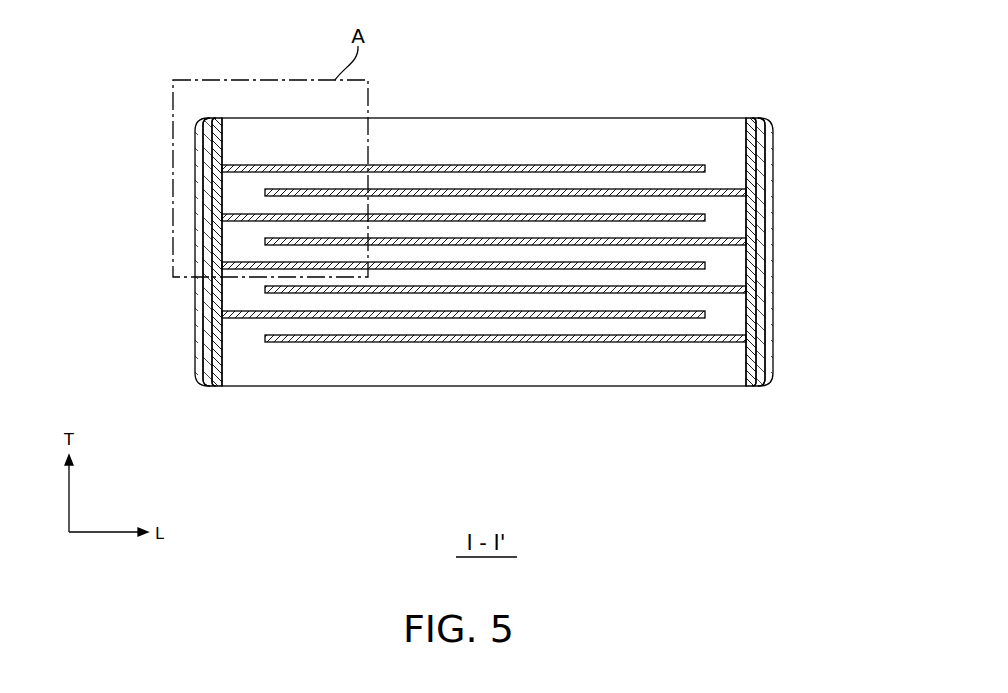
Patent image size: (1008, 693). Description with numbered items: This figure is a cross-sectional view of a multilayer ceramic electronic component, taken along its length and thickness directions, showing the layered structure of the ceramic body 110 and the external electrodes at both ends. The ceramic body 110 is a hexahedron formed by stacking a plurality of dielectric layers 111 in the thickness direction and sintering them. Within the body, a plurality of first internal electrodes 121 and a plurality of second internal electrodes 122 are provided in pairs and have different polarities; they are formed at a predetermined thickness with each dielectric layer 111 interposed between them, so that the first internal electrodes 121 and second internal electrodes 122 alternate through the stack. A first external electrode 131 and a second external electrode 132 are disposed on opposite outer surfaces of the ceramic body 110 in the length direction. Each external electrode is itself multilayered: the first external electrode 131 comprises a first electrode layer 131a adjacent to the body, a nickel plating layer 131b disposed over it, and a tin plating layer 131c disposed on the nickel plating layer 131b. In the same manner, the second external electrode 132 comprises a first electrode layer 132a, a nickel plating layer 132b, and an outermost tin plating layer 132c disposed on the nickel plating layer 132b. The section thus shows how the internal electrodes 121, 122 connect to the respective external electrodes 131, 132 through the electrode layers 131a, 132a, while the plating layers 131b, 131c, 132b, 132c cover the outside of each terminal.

The ceramic body 110 is at (537, 216).
The dielectric layer 111 is at (733, 223).
The first internal electrode 121 is at (709, 214).
The second internal electrode 122 is at (722, 246).
The first external electrode 131 is at (231, 313).
The first electrode layer 131a is at (223, 350).
The nickel plating layer 131b is at (205, 352).
The tin plating layer 131c is at (169, 292).
The second external electrode 132 is at (736, 313).
The first electrode layer 132a is at (745, 352).
The nickel plating layer 132b is at (767, 363).
The tin plating layer 132c is at (797, 292).